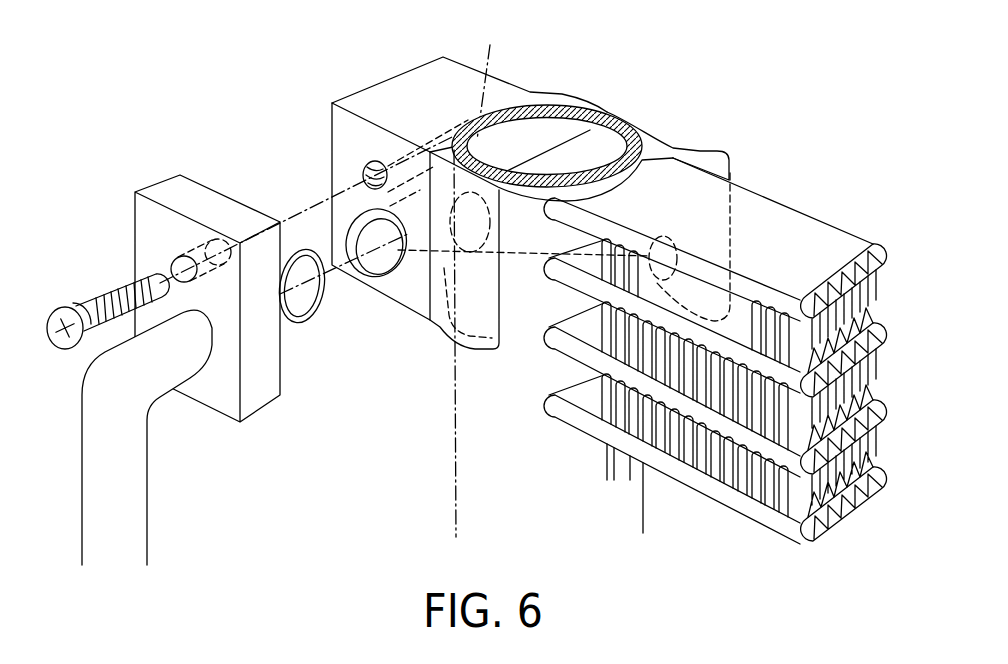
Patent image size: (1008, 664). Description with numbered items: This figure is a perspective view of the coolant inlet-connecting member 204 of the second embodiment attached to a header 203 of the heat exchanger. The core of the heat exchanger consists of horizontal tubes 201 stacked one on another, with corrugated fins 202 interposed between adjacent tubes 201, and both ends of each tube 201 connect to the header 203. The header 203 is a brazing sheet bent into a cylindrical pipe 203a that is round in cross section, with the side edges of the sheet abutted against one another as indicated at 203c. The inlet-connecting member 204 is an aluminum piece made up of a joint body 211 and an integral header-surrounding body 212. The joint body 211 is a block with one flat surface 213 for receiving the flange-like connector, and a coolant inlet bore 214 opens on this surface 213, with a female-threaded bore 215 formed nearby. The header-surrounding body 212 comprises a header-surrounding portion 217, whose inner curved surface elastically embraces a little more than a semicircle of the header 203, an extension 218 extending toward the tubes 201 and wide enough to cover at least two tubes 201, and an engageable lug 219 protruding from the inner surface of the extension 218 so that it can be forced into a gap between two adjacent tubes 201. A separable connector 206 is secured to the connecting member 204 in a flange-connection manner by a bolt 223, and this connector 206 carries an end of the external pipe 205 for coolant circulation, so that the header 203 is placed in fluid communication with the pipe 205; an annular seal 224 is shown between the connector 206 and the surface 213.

The horizontal tubes 201 is at (699, 351).
The corrugated fins 202 is at (775, 505).
The header 203 is at (470, 477).
The cylindrical pipe 203a is at (472, 418).
The abutted side edges 203c is at (511, 93).
The coolant inlet-connecting member 204 is at (496, 219).
The external pipe 205 is at (133, 495).
The separable connector 206 is at (171, 188).
The joint body 211 is at (365, 103).
The header-surrounding body 212 is at (588, 104).
The flat surface 213 is at (350, 133).
The coolant inlet bore 214 is at (385, 257).
The female-threaded bore 215 is at (363, 171).
The header-surrounding portion 217 is at (552, 98).
The extension 218 is at (713, 134).
The engageable lug 219 is at (590, 348).
The bolt 223 is at (95, 300).
The O-ring 224 is at (317, 323).